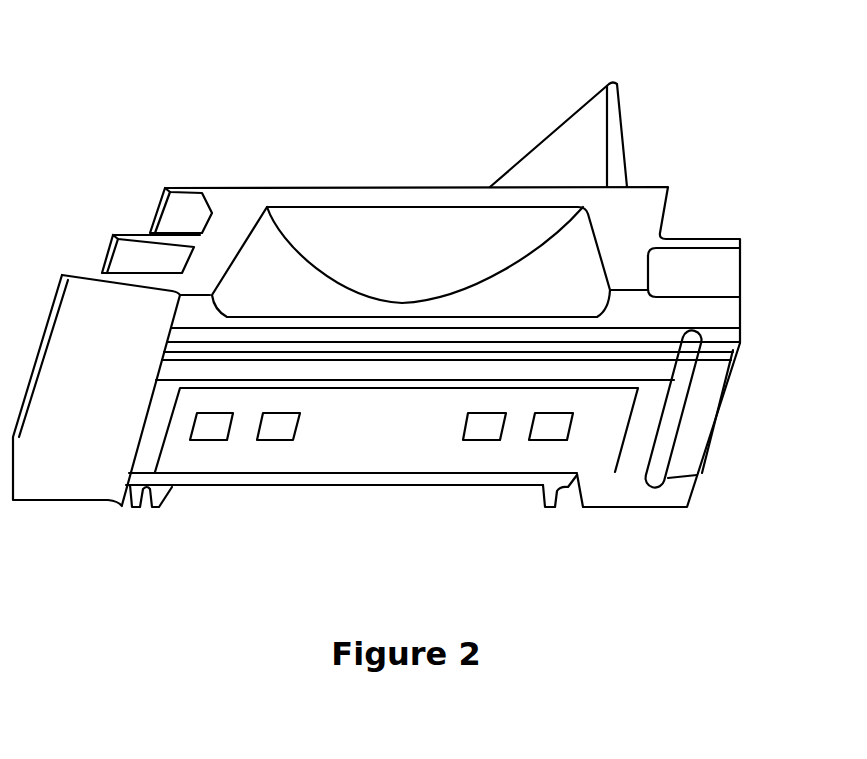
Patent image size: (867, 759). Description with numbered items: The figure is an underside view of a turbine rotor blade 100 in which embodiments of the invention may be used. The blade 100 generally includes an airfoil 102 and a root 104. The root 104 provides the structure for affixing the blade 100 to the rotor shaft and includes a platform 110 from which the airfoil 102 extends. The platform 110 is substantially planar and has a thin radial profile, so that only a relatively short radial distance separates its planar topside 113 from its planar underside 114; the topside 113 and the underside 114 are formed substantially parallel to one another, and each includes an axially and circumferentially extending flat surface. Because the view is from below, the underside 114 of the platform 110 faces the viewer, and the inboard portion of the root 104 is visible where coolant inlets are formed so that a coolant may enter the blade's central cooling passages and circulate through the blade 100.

The turbine rotor blade 100 is at (155, 68).
The airfoil 102 is at (580, 133).
The root 104 is at (747, 378).
The platform 110 is at (190, 175).
The planar topside 113 is at (313, 187).
The planar underside 114 is at (431, 272).